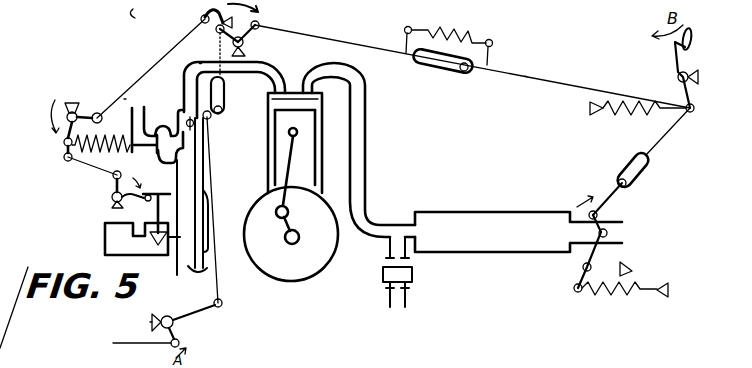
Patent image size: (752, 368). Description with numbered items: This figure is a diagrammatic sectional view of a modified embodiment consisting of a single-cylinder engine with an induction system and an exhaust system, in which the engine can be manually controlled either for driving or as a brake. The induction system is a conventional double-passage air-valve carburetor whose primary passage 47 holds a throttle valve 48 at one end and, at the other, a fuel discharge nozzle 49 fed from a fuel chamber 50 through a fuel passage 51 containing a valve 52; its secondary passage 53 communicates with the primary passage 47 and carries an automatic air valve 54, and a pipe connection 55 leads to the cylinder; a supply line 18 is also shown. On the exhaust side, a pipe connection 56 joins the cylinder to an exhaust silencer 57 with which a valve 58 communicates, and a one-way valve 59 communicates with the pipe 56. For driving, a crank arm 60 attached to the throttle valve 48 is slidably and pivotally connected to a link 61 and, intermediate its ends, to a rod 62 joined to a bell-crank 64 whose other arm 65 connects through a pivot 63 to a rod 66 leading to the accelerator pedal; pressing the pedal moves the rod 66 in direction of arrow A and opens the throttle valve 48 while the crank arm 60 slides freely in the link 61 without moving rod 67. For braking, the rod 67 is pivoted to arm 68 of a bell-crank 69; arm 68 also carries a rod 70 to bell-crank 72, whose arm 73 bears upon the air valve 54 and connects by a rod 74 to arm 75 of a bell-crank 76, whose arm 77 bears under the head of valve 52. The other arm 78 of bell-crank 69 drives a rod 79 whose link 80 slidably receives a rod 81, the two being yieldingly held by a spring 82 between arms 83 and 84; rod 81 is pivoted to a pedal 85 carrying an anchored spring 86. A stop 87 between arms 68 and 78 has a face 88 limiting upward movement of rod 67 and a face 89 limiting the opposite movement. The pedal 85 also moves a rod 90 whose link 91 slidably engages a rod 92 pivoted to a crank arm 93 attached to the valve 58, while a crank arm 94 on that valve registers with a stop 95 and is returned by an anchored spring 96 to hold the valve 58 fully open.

The fuel supply line 18 is at (141, 17).
The primary passage 47 is at (207, 271).
The throttle valve 48 is at (192, 131).
The fuel discharge nozzle 49 is at (196, 224).
The fuel chamber 50 is at (103, 243).
The fuel passage 51 is at (177, 250).
The valve 52 is at (168, 170).
The secondary passage 53 is at (172, 141).
The automatic air valve 54 is at (169, 108).
The pipe connection 55 is at (182, 78).
The pipe connection 56 is at (353, 121).
The exhaust silencer 57 is at (515, 256).
The valve 58 is at (607, 233).
The one-way valve 59 is at (413, 273).
The crank arm 60 is at (211, 121).
The link 61 is at (227, 97).
The rod 62 is at (213, 175).
The pivot pin 63 is at (222, 309).
The bell-crank 64 is at (150, 323).
The arm 65 is at (174, 327).
The rod 66 is at (142, 350).
The rod 67 is at (201, 60).
The arm 68 is at (217, 28).
The bell-crank 69 is at (244, 43).
The rod 70 is at (131, 93).
The bell-crank 72 is at (99, 123).
The arm 73 is at (62, 143).
The rod 74 is at (84, 169).
The arm 75 is at (114, 183).
The bell-crank 76 is at (110, 213).
The arm 77 is at (110, 222).
The arm 78 is at (259, 25).
The rod 79 is at (320, 37).
The link 80 is at (431, 70).
The rod 81 is at (525, 76).
The spring 82 is at (450, 32).
The arm 83 is at (404, 31).
The arm 84 is at (492, 45).
The pedal 85 is at (693, 39).
The spring 86 is at (606, 116).
The stop 87 is at (201, 20).
The face 88 is at (216, 32).
The face 89 is at (255, 6).
The rod 90 is at (667, 135).
The link 91 is at (646, 167).
The rod 92 is at (606, 205).
The crank arm 93 is at (598, 216).
The crank arm 94 is at (587, 255).
The stop 95 is at (639, 267).
The spring 96 is at (590, 296).